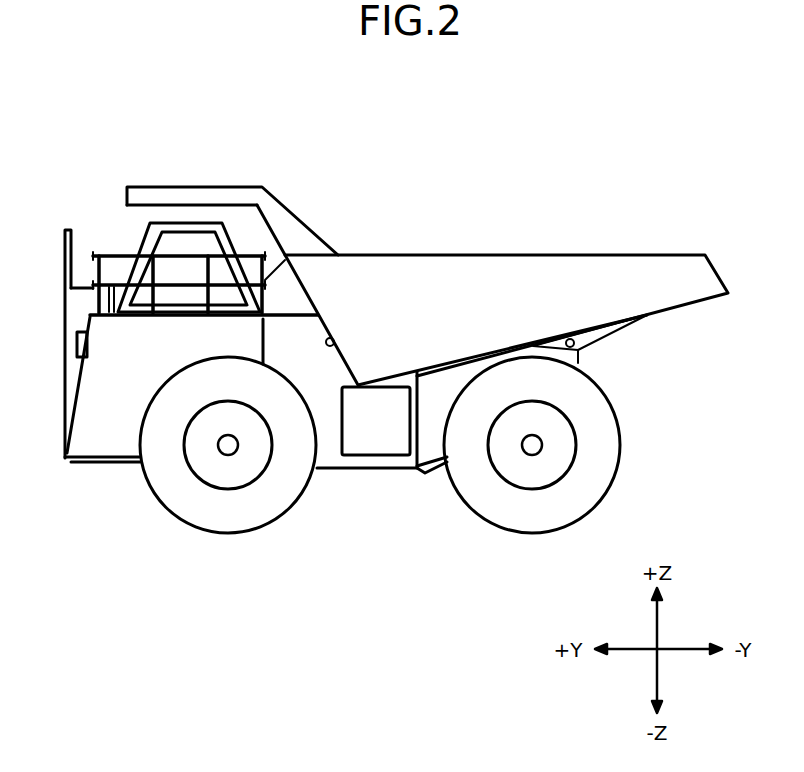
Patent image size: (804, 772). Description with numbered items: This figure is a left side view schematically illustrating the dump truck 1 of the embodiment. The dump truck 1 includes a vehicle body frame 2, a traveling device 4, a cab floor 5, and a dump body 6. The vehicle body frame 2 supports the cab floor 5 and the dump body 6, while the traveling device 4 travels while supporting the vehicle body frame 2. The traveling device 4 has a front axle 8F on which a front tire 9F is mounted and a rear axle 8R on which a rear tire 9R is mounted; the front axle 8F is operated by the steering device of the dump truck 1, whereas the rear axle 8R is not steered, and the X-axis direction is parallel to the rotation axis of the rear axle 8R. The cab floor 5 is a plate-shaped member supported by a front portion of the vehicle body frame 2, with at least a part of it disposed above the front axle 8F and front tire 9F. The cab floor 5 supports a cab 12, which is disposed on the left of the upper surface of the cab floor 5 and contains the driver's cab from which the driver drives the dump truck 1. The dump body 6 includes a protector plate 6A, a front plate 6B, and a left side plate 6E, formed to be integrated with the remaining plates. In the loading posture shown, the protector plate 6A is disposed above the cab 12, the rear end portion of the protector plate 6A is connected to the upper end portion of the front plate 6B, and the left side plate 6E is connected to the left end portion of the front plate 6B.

The dump truck 1 is at (646, 158).
The vehicle body frame 2 is at (438, 393).
The traveling device 4 is at (626, 403).
The cab floor 5 is at (108, 285).
The dump body 6 is at (470, 240).
The protector plate 6A is at (216, 187).
The front plate 6B is at (335, 340).
The left side plate 6E is at (557, 280).
The front axle 8F is at (227, 468).
The rear axle 8R is at (560, 463).
The front tire 9F is at (257, 512).
The rear tire 9R is at (600, 445).
The cab 12 is at (178, 223).